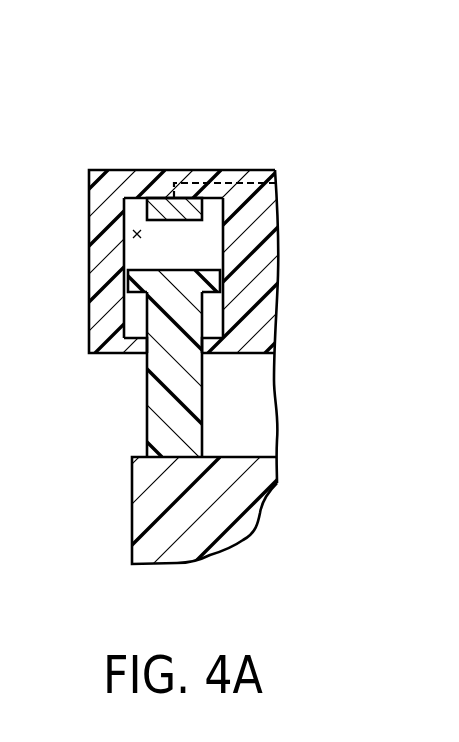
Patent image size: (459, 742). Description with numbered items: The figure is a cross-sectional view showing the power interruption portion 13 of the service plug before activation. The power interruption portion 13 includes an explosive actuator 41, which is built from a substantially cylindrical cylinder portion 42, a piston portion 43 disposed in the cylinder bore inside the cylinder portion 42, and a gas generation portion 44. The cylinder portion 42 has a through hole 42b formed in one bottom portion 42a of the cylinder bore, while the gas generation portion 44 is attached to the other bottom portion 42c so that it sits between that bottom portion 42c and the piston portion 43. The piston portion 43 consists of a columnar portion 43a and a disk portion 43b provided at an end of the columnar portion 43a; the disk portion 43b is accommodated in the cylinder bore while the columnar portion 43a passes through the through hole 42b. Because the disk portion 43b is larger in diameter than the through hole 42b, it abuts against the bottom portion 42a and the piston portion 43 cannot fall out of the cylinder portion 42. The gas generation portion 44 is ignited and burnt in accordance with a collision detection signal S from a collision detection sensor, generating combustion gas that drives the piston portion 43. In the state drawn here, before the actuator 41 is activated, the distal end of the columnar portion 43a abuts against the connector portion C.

The power interruption portion 13 is at (96, 170).
The explosive actuator 41 is at (220, 211).
The cylinder portion 42 is at (133, 234).
The bottom portion 42a is at (213, 336).
The through hole 42b is at (145, 358).
The bottom portion 42c is at (133, 198).
The piston portion 43 is at (202, 413).
The columnar portion 43a is at (148, 401).
The disk portion 43b is at (127, 272).
The gas generation portion 44 is at (157, 203).
The collision detection signal S is at (228, 182).
The connector portion C is at (267, 478).